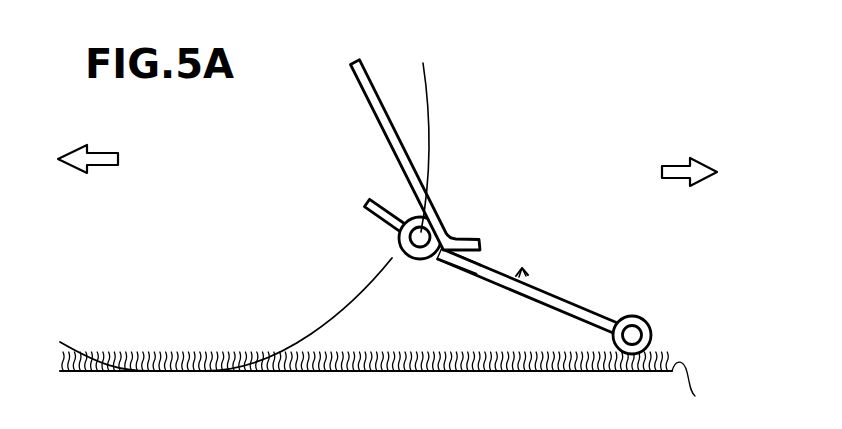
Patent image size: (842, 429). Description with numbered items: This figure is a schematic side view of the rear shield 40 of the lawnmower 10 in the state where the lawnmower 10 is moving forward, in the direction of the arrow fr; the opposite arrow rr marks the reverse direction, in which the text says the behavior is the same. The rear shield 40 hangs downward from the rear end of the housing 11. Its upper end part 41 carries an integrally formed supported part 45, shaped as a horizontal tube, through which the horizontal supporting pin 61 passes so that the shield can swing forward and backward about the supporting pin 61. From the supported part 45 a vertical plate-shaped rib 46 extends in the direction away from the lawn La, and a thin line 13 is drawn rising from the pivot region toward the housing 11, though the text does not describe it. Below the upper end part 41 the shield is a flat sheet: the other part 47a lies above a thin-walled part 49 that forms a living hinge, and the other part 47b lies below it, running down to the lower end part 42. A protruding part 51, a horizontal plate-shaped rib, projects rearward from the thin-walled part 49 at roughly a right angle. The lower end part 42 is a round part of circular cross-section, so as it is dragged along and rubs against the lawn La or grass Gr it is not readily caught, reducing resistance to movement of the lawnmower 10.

The lawnmower 10 is at (623, 98).
The housing 11 is at (405, 142).
The seat back 13 is at (428, 78).
The rear shield 40 is at (566, 280).
The upper end part 41 is at (447, 155).
The lower end part 42 is at (643, 318).
The supported part 45 is at (425, 192).
The rib 46 is at (380, 202).
The other part of flat-plate area 47a is at (377, 289).
The other part of flat-plate area 47b is at (562, 308).
The thin-walled part 49 is at (507, 275).
The protruding part 51 is at (528, 274).
The supporting pin 61 is at (423, 225).
The grass Gr is at (485, 348).
The lawn La is at (698, 388).
The forward direction arrow fr is at (75, 160).
The rear direction rr is at (702, 172).